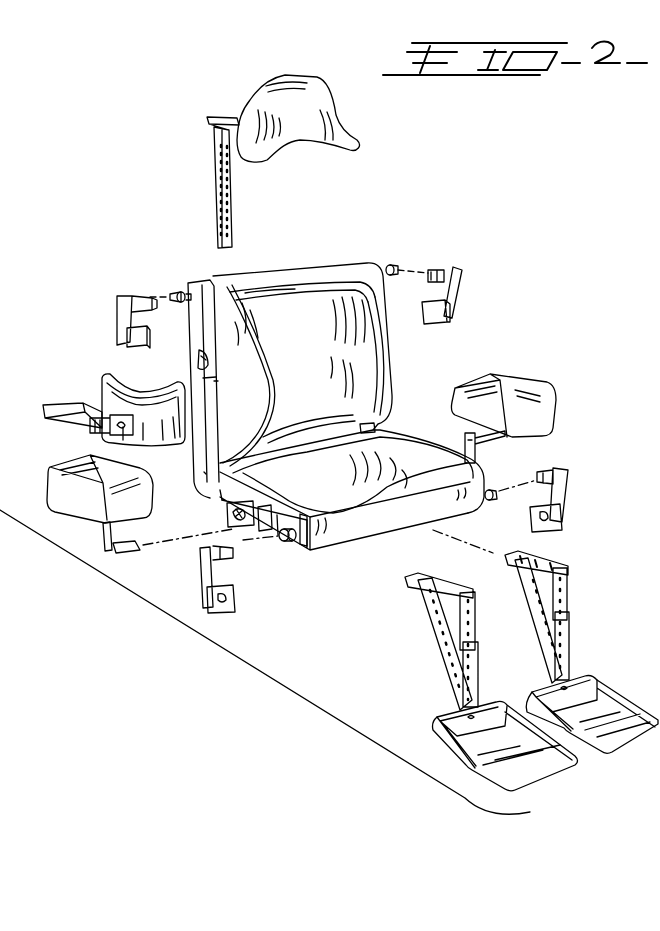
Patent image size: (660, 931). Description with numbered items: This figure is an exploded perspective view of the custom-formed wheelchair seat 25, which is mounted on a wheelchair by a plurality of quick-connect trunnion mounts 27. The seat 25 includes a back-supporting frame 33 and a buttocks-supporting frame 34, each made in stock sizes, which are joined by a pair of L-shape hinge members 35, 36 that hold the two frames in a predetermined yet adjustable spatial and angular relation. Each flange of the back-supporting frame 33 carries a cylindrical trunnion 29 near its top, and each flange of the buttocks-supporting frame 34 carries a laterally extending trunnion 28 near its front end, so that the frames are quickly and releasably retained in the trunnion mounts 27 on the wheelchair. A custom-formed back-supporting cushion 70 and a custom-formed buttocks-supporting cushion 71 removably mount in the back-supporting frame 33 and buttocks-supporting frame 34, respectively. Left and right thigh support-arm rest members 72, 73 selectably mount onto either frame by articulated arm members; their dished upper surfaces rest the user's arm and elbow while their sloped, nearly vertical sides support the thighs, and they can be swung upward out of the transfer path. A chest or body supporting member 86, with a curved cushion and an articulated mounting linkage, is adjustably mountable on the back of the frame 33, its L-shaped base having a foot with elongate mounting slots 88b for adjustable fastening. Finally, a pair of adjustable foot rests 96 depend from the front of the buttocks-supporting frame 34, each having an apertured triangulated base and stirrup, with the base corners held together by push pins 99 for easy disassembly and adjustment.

The custom-formed wheelchair seat 25 is at (490, 297).
The quick-connect trunnion mount 27 is at (118, 300).
The trunnion 28 is at (281, 541).
The trunnion 29 is at (180, 291).
The back-supporting frame 33 is at (196, 328).
The buttocks-supporting frame 34 is at (298, 555).
The L-shape hinge member 35 is at (200, 478).
The L-shape hinge member 36 is at (382, 427).
The back-supporting cushion 70 is at (341, 266).
The buttocks-supporting cushion 71 is at (347, 520).
The left thigh support-arm rest member 72 is at (80, 487).
The right thigh support-arm rest member 73 is at (538, 408).
The chest or body supporting member 86 is at (60, 428).
The elongate mounting slot 88b is at (78, 405).
The adjustable foot rest 96 is at (430, 680).
The push pin 99 is at (570, 566).